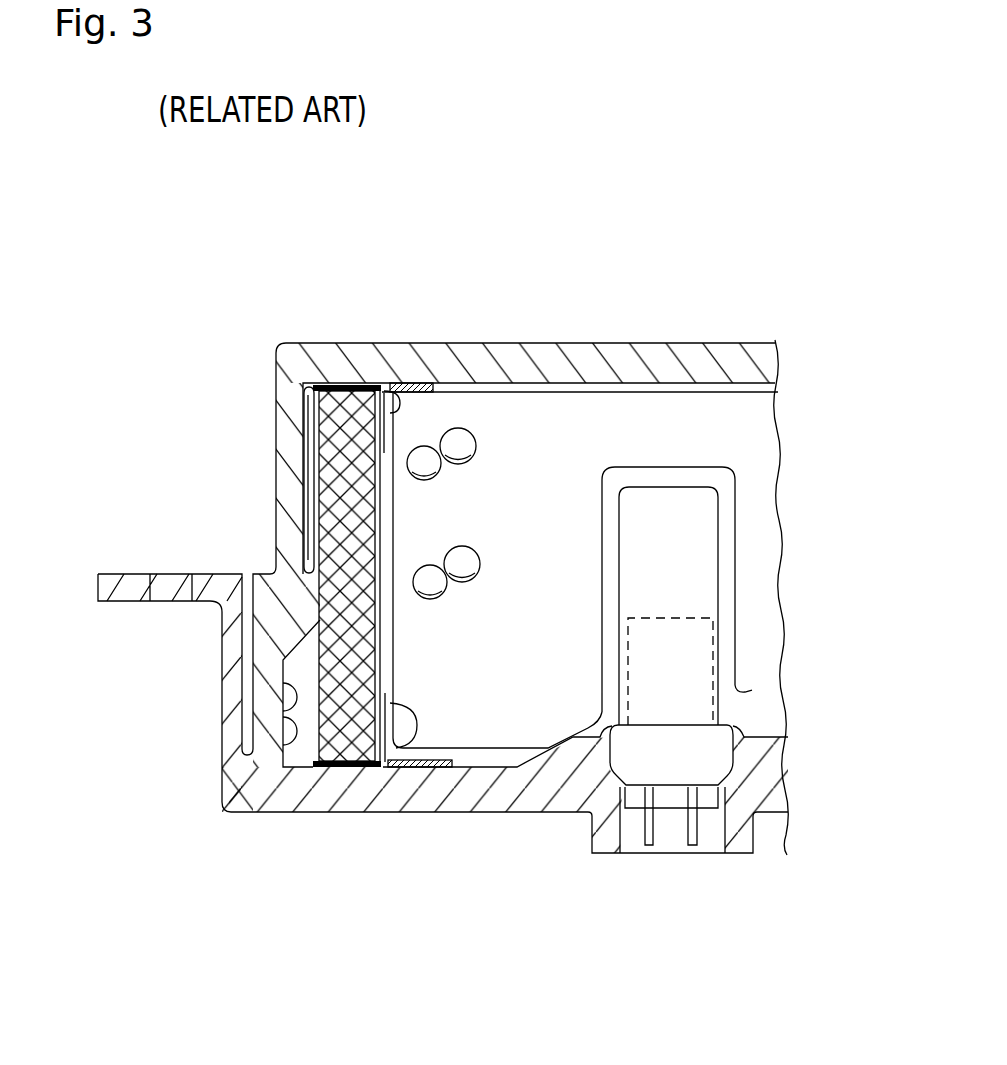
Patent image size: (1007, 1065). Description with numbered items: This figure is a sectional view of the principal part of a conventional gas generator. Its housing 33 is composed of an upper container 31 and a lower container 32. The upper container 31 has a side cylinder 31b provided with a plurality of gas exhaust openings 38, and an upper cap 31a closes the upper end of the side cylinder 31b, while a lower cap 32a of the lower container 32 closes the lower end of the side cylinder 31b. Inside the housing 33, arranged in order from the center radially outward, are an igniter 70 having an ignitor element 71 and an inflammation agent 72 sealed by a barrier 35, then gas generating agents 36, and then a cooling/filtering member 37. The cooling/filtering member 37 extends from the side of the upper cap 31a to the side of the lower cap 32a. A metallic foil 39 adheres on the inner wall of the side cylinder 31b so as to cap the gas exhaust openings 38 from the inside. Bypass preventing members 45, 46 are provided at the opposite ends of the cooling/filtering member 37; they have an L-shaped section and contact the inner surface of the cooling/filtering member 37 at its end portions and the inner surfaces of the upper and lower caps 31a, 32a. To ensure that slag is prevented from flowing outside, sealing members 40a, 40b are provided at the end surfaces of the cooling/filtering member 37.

The upper container 31 is at (530, 333).
The upper cap 31a is at (477, 365).
The side cylinder 31b is at (281, 508).
The lower container 32 is at (437, 819).
The lower cap 32a is at (503, 785).
The housing 33 is at (211, 364).
The barrier 35 is at (703, 467).
The gas generating agents 36 is at (446, 420).
The cooling/filtering member 37 is at (339, 398).
The gas exhaust openings 38 is at (278, 472).
The metallic foil 39 is at (277, 398).
The sealing member 40a is at (326, 385).
The sealing member 40b is at (333, 770).
The bypass preventing member 45 is at (400, 378).
The bypass preventing member 46 is at (418, 722).
The igniter 70 is at (853, 535).
The ignitor element 71 is at (743, 663).
The inflammation agent 72 is at (693, 552).